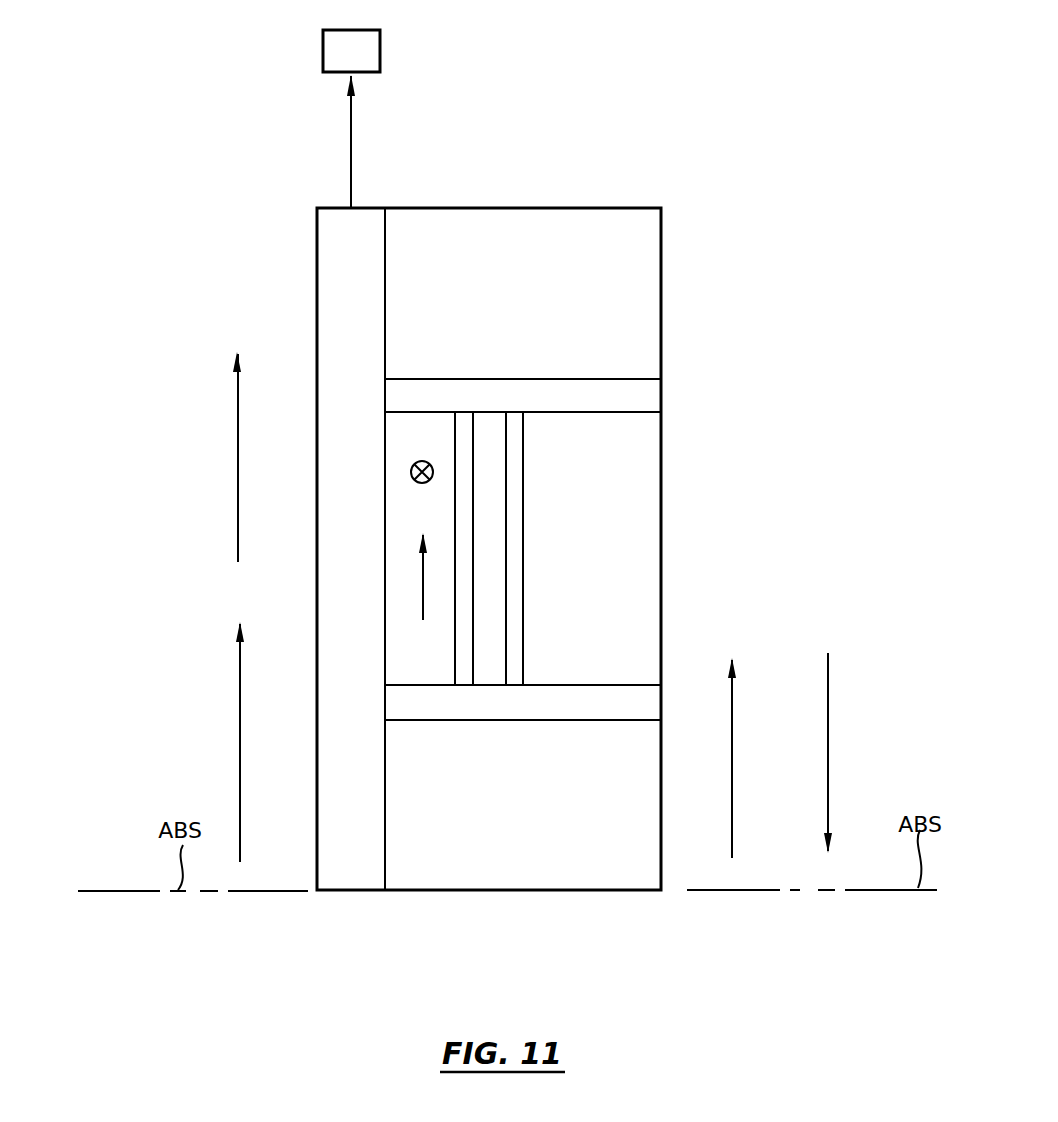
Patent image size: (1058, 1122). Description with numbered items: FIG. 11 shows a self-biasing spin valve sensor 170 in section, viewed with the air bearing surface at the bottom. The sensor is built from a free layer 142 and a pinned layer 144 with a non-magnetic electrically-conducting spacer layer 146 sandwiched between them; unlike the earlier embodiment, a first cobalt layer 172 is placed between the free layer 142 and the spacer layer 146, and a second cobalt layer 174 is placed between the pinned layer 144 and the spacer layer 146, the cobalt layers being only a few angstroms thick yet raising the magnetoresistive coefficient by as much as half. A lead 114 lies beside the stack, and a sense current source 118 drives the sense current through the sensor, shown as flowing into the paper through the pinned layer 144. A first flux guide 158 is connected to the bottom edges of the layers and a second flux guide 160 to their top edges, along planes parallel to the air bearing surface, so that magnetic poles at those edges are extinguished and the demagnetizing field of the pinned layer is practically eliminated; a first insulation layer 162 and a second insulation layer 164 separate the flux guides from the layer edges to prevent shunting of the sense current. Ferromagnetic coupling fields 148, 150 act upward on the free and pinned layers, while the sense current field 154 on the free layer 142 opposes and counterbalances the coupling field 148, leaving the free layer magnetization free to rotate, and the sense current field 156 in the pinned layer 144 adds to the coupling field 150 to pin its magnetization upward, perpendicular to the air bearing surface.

The lead 114 is at (340, 252).
The sense current source 118 is at (381, 45).
The free layer 142 is at (645, 442).
The pinned layer 144 is at (422, 503).
The spacer layer 146 is at (493, 677).
The ferromagnetic coupling field 148 is at (733, 733).
The ferromagnetic coupling field 150 is at (238, 735).
The sense current field 154 is at (830, 700).
The sense current field 156 is at (237, 462).
The first flux guide 158 is at (550, 865).
The second flux guide 160 is at (608, 233).
The first insulation layer 162 is at (588, 707).
The second insulation layer 164 is at (440, 392).
The spin valve sensor 170 is at (608, 153).
The first cobalt layer 172 is at (513, 599).
The second cobalt layer 174 is at (466, 653).